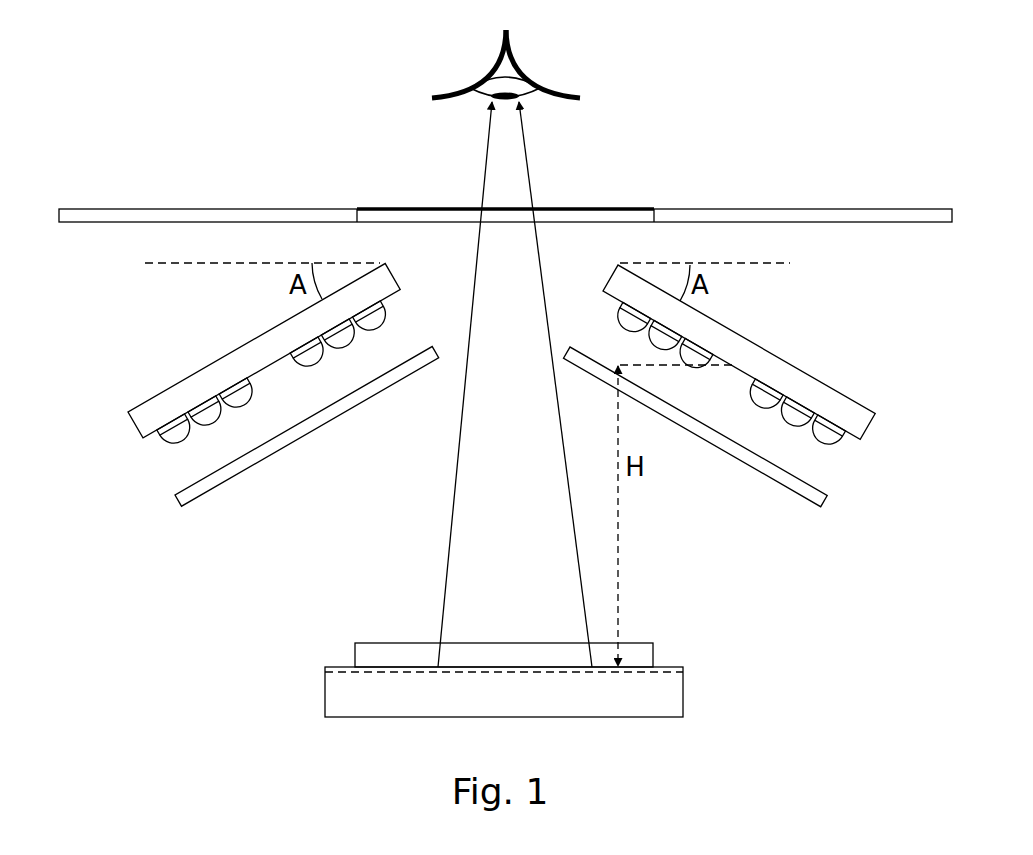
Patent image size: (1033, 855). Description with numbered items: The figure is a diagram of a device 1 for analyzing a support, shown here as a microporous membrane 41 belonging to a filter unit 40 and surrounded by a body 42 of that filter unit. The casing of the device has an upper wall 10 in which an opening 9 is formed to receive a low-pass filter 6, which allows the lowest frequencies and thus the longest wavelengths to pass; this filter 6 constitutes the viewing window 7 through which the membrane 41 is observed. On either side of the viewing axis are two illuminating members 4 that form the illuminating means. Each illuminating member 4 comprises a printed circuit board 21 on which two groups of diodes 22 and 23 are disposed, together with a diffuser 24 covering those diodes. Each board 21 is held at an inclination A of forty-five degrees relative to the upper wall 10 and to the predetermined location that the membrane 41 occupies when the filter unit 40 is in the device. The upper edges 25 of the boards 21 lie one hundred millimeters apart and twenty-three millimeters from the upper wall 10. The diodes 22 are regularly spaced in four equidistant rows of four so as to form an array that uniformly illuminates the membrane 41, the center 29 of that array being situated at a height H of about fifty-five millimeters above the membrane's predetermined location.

The device 1 is at (103, 103).
The illuminating member 4 is at (508, 356).
The low-pass filter 6 is at (590, 212).
The viewing window 7 is at (362, 196).
The opening 9 is at (356, 219).
The upper wall 10 is at (730, 210).
The printed circuit board 21 is at (242, 360).
The diodes 22 is at (255, 405).
The diodes 23 is at (217, 422).
The diffuser 24 is at (277, 447).
The upper edge 25 is at (390, 265).
The center 29 is at (735, 365).
The filter unit 40 is at (457, 693).
The microporous membrane 41 is at (678, 666).
The body 42 is at (350, 706).